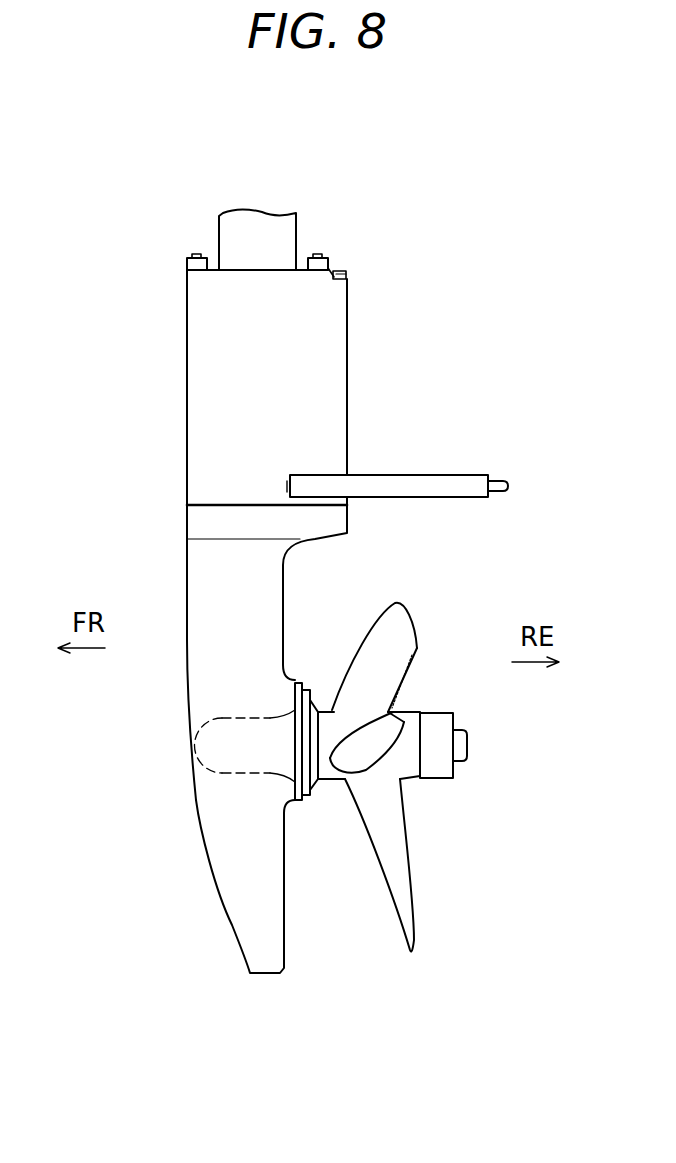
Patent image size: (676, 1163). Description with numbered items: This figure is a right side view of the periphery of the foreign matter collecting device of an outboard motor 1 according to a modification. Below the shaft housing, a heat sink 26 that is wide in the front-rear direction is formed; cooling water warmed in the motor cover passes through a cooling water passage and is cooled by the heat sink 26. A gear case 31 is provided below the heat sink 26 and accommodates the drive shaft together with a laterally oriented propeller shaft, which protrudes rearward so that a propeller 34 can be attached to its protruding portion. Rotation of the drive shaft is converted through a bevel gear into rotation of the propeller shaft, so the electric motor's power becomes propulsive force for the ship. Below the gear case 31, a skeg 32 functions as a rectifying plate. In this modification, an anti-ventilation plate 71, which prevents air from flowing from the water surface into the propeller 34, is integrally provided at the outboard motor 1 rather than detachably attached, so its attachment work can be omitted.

The outboard motor 1 is at (132, 311).
The heat sink 26 is at (347, 340).
The gear case 31 is at (202, 576).
The skeg 32 is at (218, 868).
The propeller 34 is at (393, 600).
The anti-ventilation plate 71 is at (430, 475).